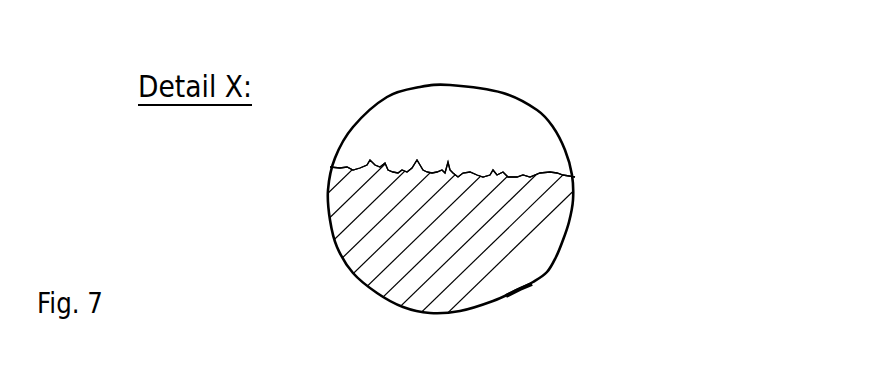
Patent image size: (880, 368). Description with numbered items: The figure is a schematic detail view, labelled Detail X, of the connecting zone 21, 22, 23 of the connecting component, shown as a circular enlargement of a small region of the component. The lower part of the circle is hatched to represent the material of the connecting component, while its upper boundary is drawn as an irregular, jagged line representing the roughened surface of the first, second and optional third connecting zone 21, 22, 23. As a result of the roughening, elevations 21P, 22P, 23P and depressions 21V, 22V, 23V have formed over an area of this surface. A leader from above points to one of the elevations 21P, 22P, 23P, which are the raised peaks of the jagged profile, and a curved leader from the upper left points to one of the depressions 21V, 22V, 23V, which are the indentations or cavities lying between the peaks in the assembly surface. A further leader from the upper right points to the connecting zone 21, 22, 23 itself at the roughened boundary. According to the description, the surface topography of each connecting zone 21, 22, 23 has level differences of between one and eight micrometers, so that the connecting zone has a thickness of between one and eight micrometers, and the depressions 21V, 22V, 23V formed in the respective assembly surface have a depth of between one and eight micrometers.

The first connecting zone 21 is at (460, 162).
The second connecting zone 22 is at (511, 184).
The third connecting zone 23 is at (511, 184).
The elevation 21P is at (418, 157).
The elevation 22P is at (452, 93).
The elevation 23P is at (452, 93).
The depression 21V is at (402, 172).
The depression 22V is at (441, 127).
The depression 23V is at (452, 127).